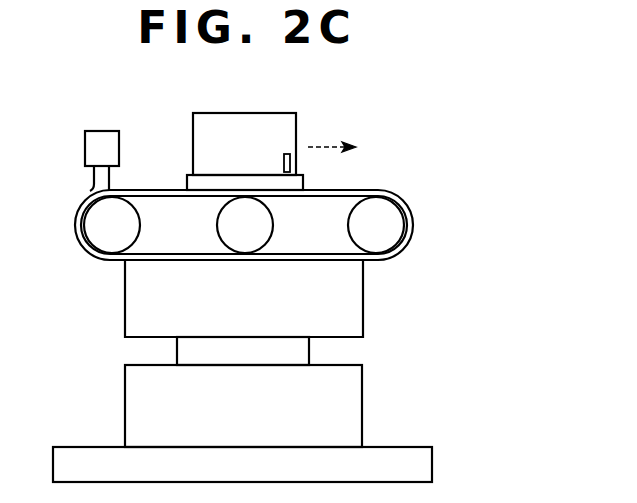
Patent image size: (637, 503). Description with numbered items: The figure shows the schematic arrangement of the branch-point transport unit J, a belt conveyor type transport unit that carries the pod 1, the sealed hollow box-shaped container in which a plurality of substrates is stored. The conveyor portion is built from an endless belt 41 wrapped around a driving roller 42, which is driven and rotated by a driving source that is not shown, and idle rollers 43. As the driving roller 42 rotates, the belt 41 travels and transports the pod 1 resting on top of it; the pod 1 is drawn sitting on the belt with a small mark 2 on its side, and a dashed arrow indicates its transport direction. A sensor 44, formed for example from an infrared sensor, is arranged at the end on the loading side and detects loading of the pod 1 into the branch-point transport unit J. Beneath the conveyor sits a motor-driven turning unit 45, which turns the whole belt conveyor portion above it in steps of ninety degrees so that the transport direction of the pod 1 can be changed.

The pod 1 is at (308, 104).
The marker 2 is at (287, 153).
The branch-point transport unit J is at (474, 80).
The endless belt 41 is at (387, 189).
The driving roller 42 is at (378, 245).
The idle rollers 43 is at (108, 245).
The sensor 44 is at (101, 140).
The turning unit 45 is at (352, 408).